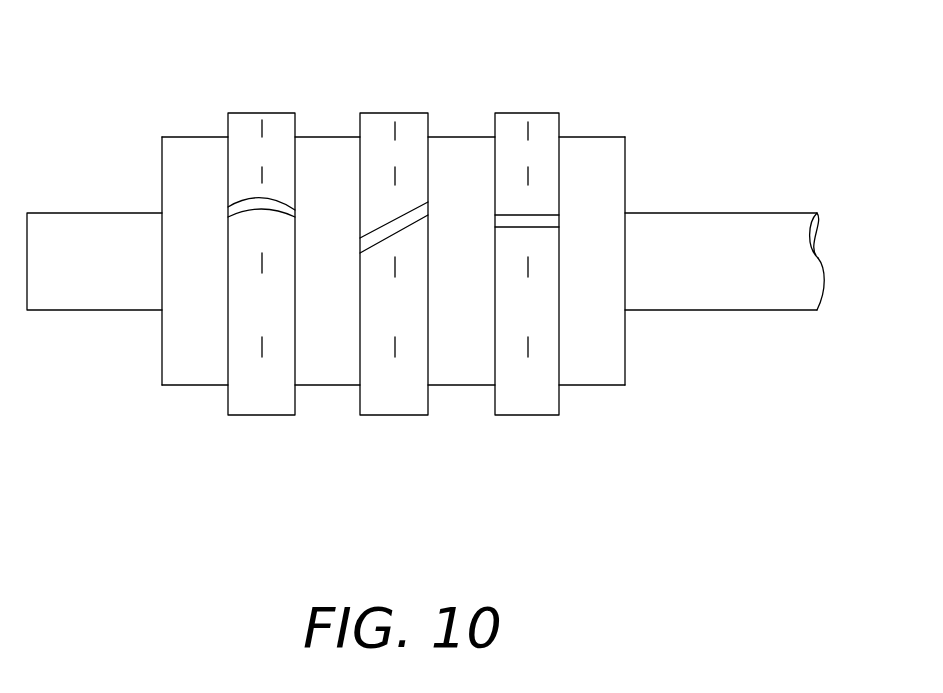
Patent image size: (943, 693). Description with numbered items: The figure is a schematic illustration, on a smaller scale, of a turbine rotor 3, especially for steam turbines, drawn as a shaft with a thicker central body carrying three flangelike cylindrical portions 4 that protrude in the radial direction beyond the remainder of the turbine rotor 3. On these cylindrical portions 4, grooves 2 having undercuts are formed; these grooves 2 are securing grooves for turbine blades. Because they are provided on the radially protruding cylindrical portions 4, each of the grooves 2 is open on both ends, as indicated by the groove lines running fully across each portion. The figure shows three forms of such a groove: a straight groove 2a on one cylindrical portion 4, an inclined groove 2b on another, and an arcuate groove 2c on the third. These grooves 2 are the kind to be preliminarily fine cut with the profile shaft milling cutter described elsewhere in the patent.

The undercut groove 2 is at (256, 224).
The straight groove 2a is at (508, 214).
The inclined groove 2b is at (383, 218).
The arcuate groove 2c is at (262, 198).
The turbine rotor 3 is at (574, 90).
The cylindrical portion 4 is at (523, 407).